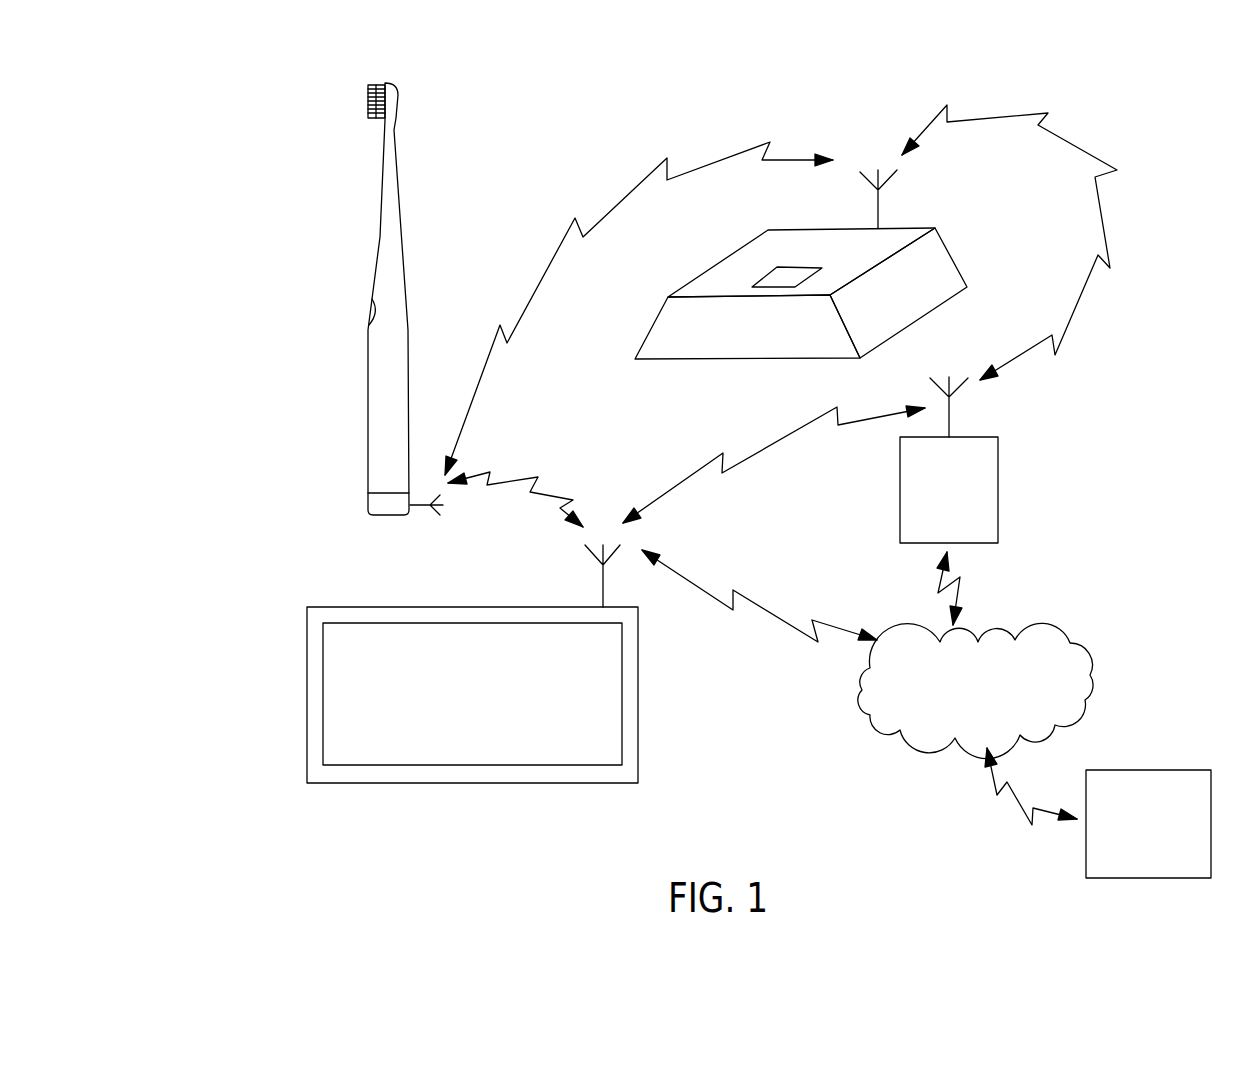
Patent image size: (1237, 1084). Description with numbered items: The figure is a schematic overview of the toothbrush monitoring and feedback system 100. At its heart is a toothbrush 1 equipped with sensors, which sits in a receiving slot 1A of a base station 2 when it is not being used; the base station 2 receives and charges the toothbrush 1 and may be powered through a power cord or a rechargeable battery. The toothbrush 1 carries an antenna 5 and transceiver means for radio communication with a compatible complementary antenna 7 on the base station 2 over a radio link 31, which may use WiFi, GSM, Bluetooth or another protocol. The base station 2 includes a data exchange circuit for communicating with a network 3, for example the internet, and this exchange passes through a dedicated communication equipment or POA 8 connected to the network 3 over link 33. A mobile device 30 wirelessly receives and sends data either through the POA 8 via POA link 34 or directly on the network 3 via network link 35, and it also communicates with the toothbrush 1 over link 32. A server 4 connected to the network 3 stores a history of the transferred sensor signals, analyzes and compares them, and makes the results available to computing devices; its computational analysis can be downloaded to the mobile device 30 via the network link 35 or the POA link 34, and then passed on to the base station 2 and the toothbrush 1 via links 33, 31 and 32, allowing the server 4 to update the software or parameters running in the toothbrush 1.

The toothbrush monitoring and feedback system 100 is at (262, 160).
The toothbrush 1 is at (373, 227).
The receiving slot 1A is at (783, 277).
The base station 2 is at (960, 270).
The network 3 is at (1075, 645).
The server 4 is at (1153, 768).
The antenna 5 is at (440, 515).
The antenna 7 is at (885, 184).
The dedicated communication equipment (POA) 8 is at (1000, 490).
The mobile device 30 is at (307, 688).
The radio link 31 is at (567, 232).
The link 32 is at (527, 475).
The link 33 is at (1088, 153).
The POA link 34 is at (787, 435).
The network link 35 is at (775, 612).